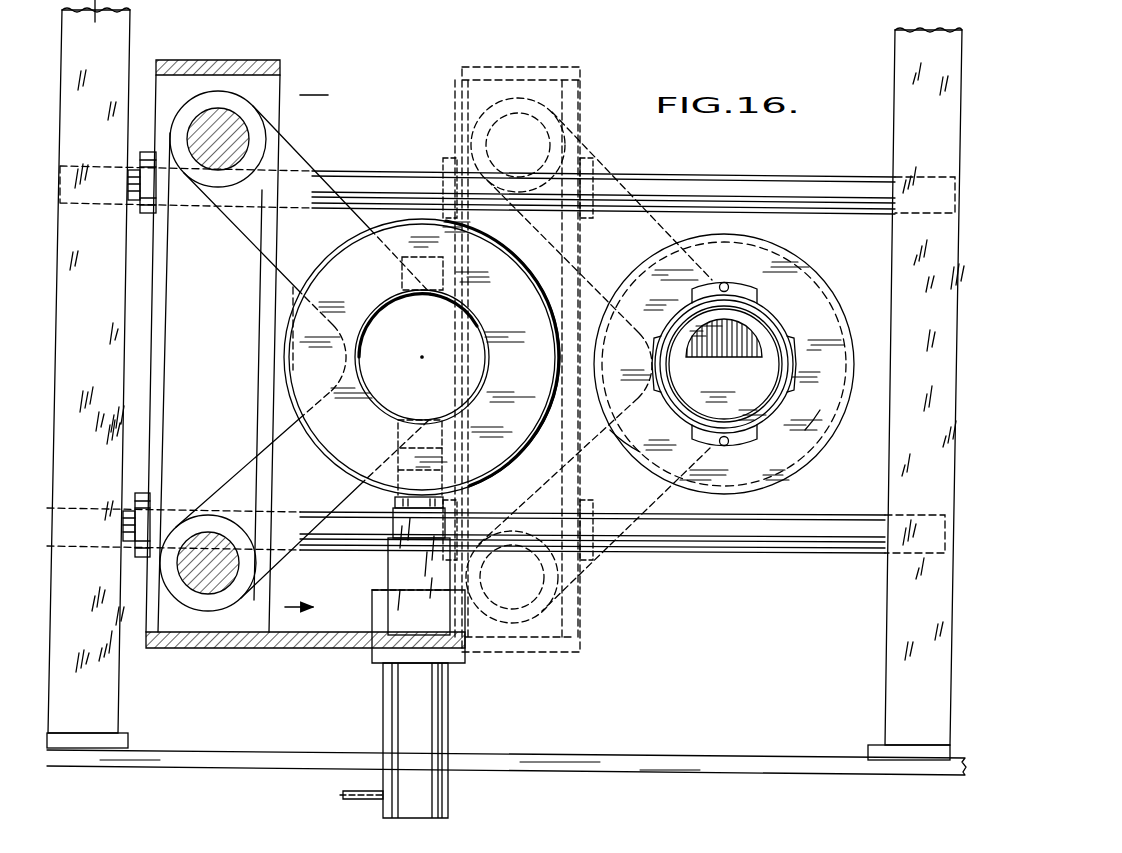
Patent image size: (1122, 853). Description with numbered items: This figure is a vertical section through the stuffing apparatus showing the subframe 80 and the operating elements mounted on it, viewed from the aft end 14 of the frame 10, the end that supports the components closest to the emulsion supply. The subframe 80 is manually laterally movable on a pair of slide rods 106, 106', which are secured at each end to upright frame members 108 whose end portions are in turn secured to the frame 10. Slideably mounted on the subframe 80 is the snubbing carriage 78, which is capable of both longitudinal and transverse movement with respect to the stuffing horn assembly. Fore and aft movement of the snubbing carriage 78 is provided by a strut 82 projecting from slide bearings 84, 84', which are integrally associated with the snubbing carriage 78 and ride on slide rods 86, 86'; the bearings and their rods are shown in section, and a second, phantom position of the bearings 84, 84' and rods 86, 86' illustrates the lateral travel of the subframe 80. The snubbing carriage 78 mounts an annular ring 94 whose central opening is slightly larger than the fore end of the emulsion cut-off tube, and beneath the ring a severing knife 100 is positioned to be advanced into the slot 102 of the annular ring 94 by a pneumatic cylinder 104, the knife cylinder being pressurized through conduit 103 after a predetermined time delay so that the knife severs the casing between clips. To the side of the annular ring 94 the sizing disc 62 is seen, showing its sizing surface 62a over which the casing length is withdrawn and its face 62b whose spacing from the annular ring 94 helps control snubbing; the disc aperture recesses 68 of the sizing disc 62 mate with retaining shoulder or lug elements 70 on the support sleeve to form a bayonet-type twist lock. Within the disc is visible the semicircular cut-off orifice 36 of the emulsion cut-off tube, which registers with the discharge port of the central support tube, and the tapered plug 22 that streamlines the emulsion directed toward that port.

The frame 10 is at (628, 748).
The aft end 14 is at (780, 0).
The tapered plug 22 is at (743, 343).
The semicircular cut-off orifice 36 is at (705, 337).
The sizing disc 62 is at (827, 270).
The sizing surface 62a is at (622, 440).
The face of sizing disc 62b is at (812, 422).
The disc aperture recesses 68 is at (730, 283).
The retaining shoulder or lug elements 70 is at (652, 357).
The snubbing carriage 78 is at (398, 145).
The subframe 80 is at (268, 68).
The strut 82 is at (242, 218).
The slide bearing 84 is at (367, 107).
The slide bearing 84' is at (359, 601).
The slide rod 86 is at (408, 142).
The slide rod 86' is at (402, 536).
The annular ring 94 is at (508, 366).
The severing knife 100 is at (398, 456).
The slot 102 is at (408, 272).
The conduit 103 is at (343, 795).
The pneumatic cylinder 104 is at (440, 712).
The slide rod 106 is at (507, 176).
The slide rod 106' is at (496, 554).
The frame members 108 is at (905, 69).